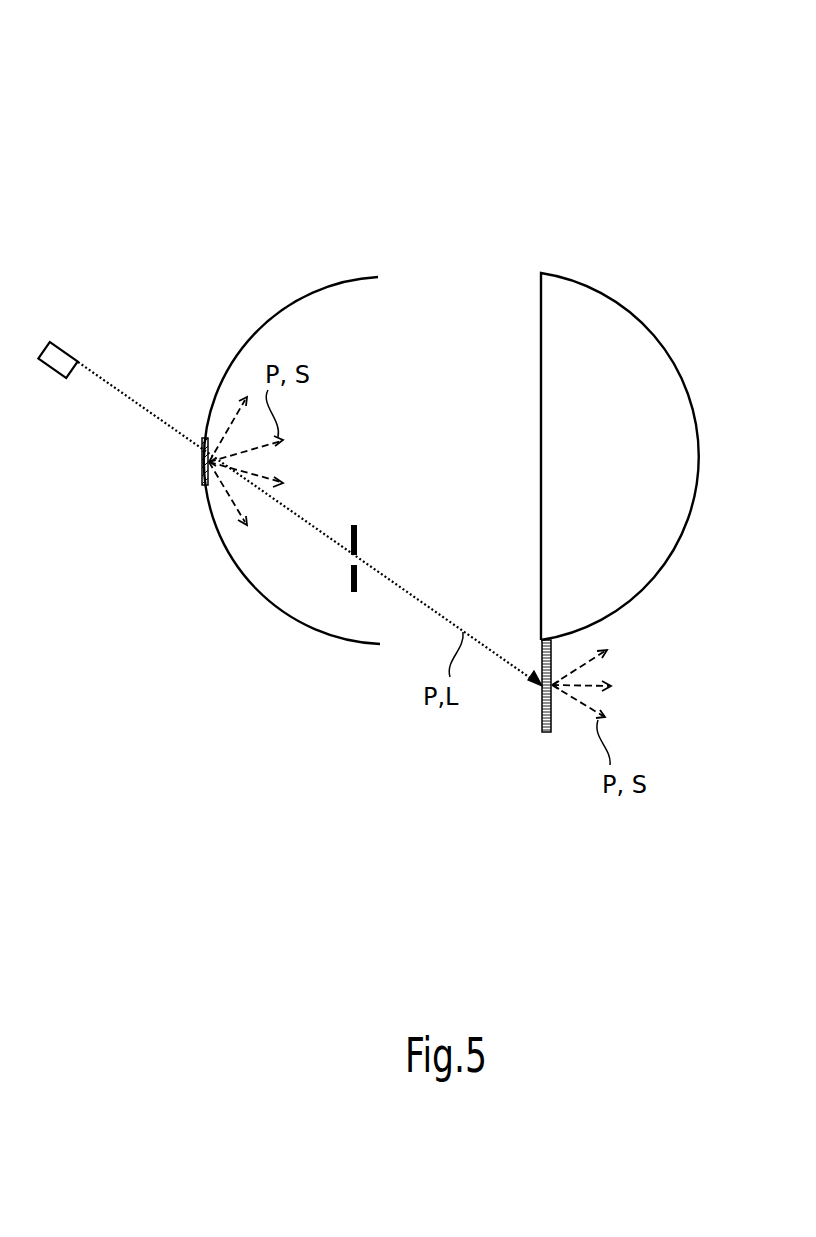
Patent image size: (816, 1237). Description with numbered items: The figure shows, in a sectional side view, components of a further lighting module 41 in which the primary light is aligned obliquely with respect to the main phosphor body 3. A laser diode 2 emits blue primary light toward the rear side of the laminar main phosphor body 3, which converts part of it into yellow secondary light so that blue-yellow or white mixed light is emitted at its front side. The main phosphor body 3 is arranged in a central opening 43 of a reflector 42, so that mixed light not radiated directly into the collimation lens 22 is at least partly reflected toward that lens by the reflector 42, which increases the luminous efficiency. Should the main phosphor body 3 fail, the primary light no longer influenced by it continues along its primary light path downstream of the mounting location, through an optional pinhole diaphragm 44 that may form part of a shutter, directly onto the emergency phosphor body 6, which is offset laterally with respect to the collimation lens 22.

The lighting module 41 is at (208, 121).
The laser diode 2 is at (63, 345).
The main phosphor body 3 is at (202, 477).
The reflector 42 is at (280, 615).
The central opening 43 is at (203, 437).
The pinhole diaphragm 44 is at (354, 524).
The collimation lens 22 is at (645, 315).
The emergency phosphor body 6 is at (545, 733).